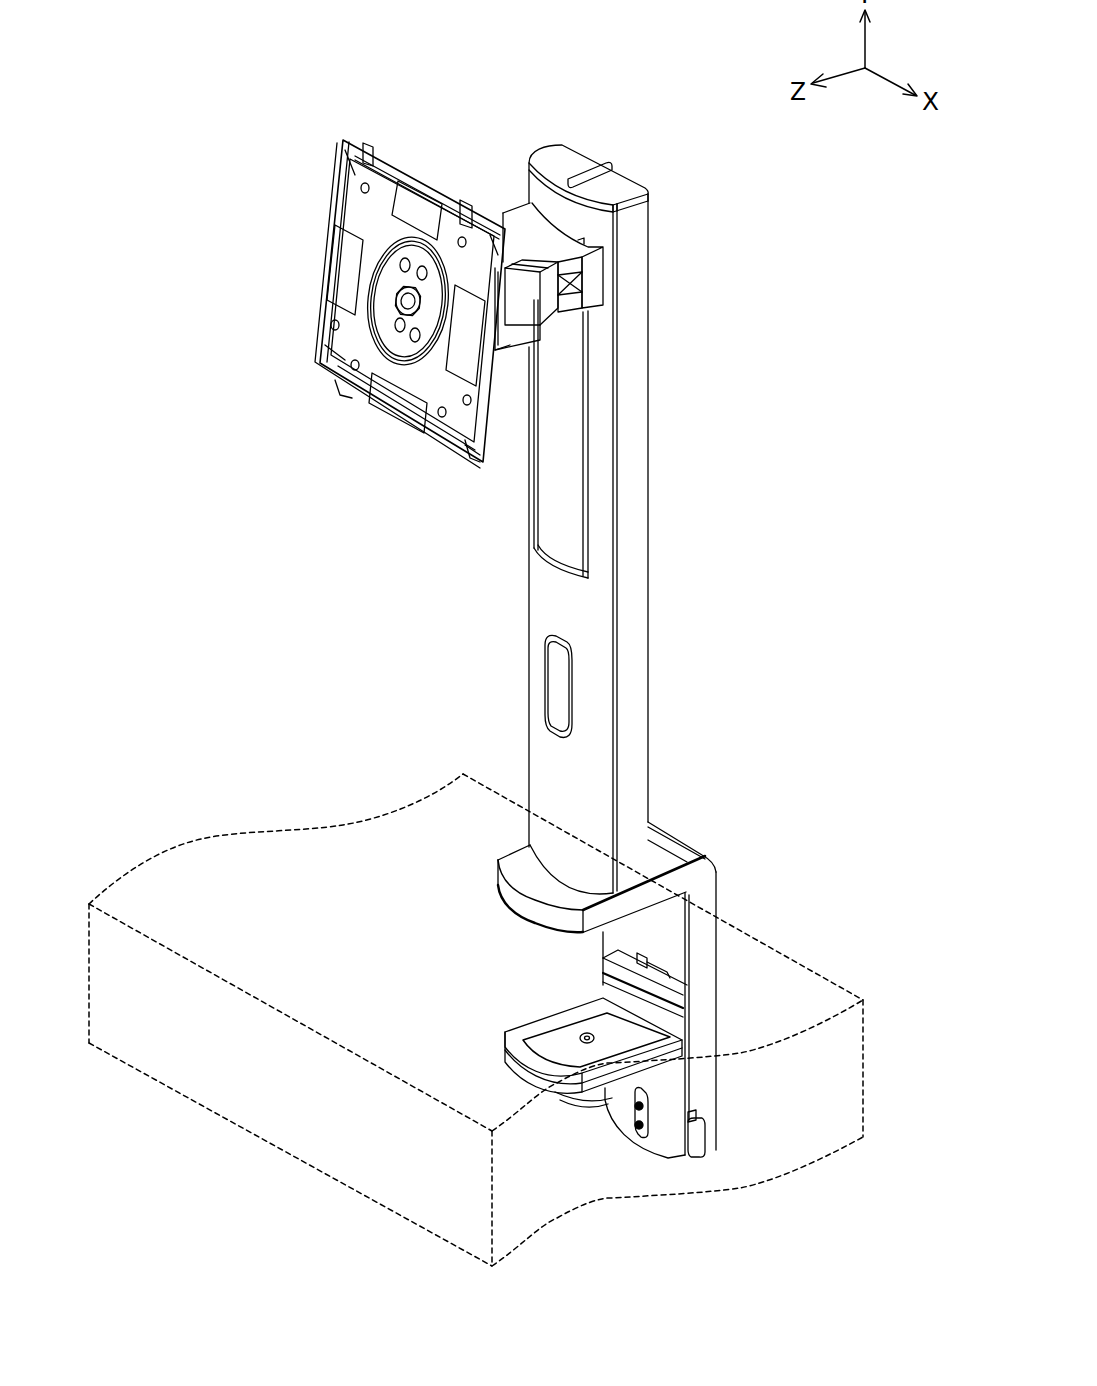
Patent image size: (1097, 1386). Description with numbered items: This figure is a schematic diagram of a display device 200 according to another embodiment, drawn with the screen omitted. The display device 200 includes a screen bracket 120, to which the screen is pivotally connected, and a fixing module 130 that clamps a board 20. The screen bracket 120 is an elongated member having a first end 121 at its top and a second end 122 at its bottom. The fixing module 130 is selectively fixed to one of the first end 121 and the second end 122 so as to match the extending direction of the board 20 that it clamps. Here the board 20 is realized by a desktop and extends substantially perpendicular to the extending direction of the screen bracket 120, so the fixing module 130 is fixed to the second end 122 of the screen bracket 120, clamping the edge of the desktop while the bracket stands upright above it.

The display device 200 is at (620, 118).
The board 20 is at (830, 1087).
The screen bracket 120 is at (628, 560).
The first end 121 is at (628, 225).
The second end 122 is at (568, 853).
The fixing module 130 is at (728, 944).